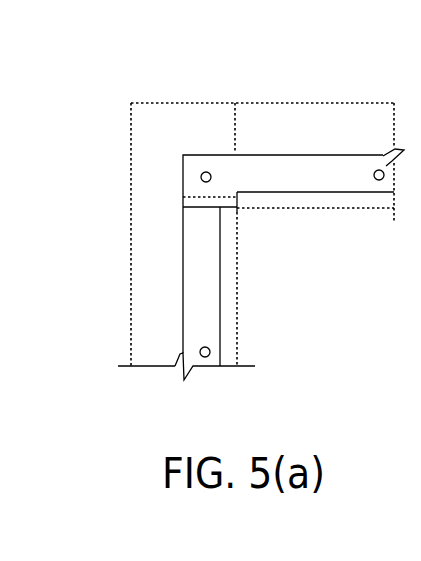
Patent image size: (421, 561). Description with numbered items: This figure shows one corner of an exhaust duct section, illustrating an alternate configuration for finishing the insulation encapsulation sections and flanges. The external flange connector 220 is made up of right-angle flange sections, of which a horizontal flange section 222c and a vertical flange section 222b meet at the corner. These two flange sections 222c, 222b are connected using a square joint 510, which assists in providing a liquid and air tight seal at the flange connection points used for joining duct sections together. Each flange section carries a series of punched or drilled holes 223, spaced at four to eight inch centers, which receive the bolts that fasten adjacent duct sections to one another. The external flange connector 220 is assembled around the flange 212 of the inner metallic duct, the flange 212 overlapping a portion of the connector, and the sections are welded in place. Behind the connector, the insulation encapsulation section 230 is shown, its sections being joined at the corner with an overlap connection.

The external flange connector 220 is at (230, 173).
The holes 223 is at (201, 177).
The insulation encapsulation section 230 is at (173, 247).
The flange section 222c is at (317, 178).
The flange section 222b is at (207, 290).
The square joint 510 is at (203, 210).
The flange 212 is at (225, 327).